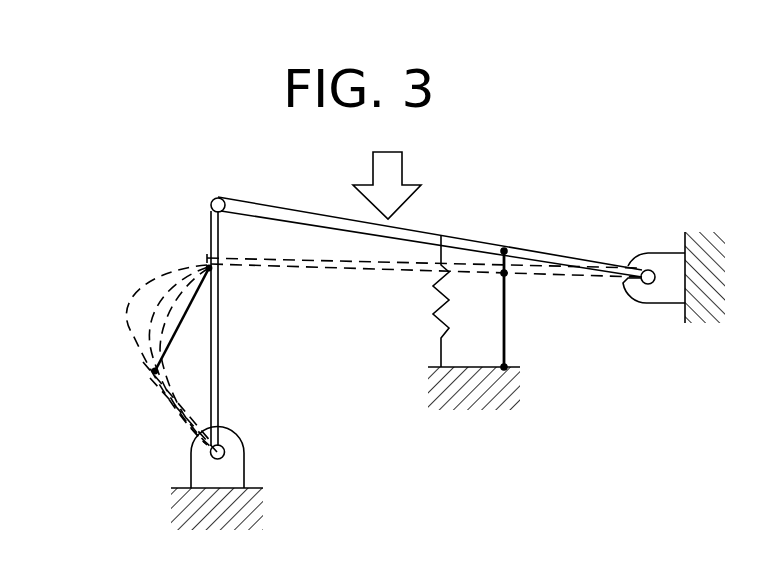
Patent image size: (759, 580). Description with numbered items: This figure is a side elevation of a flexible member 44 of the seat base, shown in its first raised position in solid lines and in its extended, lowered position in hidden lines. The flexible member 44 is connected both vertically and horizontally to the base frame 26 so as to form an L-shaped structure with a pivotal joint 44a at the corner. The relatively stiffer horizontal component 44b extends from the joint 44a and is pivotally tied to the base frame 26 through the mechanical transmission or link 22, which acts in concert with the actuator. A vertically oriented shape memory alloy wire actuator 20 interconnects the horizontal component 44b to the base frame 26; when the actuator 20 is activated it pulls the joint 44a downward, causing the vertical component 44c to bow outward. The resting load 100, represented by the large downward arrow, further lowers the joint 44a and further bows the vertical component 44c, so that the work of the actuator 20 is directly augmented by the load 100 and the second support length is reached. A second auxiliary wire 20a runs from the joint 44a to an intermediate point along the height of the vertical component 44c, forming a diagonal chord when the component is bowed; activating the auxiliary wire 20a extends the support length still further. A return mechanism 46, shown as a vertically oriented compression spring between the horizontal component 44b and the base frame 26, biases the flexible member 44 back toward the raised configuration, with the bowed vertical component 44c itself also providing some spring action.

The resting load 100 is at (373, 152).
The mechanical transmission or link 22 is at (537, 193).
The pivotal joint 44a is at (211, 204).
The horizontal component 44b is at (447, 232).
The flexible member 44 is at (137, 334).
The auxiliary wire 20a is at (188, 316).
The vertical component 44c is at (150, 372).
The return mechanism 46 is at (437, 330).
The actuator 20 is at (505, 320).
The base frame 26 is at (434, 394).